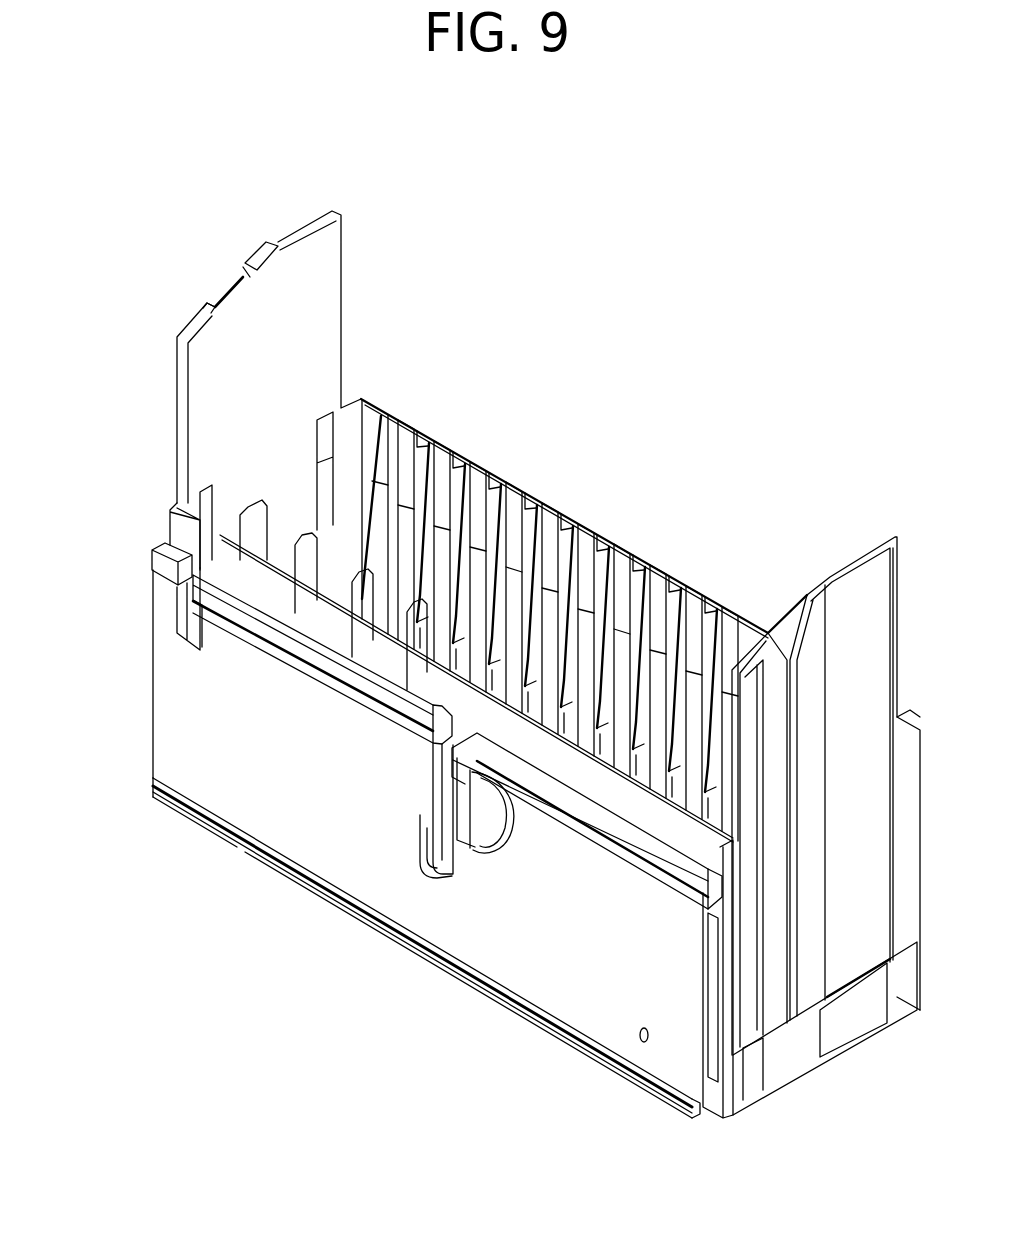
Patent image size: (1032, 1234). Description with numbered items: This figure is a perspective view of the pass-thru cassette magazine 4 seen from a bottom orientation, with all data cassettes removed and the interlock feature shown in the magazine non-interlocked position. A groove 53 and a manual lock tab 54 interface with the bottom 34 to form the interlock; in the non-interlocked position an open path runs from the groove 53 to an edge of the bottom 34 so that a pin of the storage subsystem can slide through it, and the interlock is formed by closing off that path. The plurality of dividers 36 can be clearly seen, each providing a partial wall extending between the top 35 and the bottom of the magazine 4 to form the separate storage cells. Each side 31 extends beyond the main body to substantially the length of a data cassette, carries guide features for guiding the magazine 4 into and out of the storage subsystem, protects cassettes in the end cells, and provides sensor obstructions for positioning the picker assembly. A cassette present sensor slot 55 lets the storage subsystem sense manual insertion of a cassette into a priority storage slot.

The magazine 4 is at (128, 546).
The side 31 is at (336, 213).
The bottom 34 is at (592, 1079).
The top 35 is at (610, 543).
The divider 36 is at (502, 487).
The groove 53 is at (430, 877).
The manual lock tab 54 is at (465, 797).
The cassette present sensor slot 55 is at (182, 614).